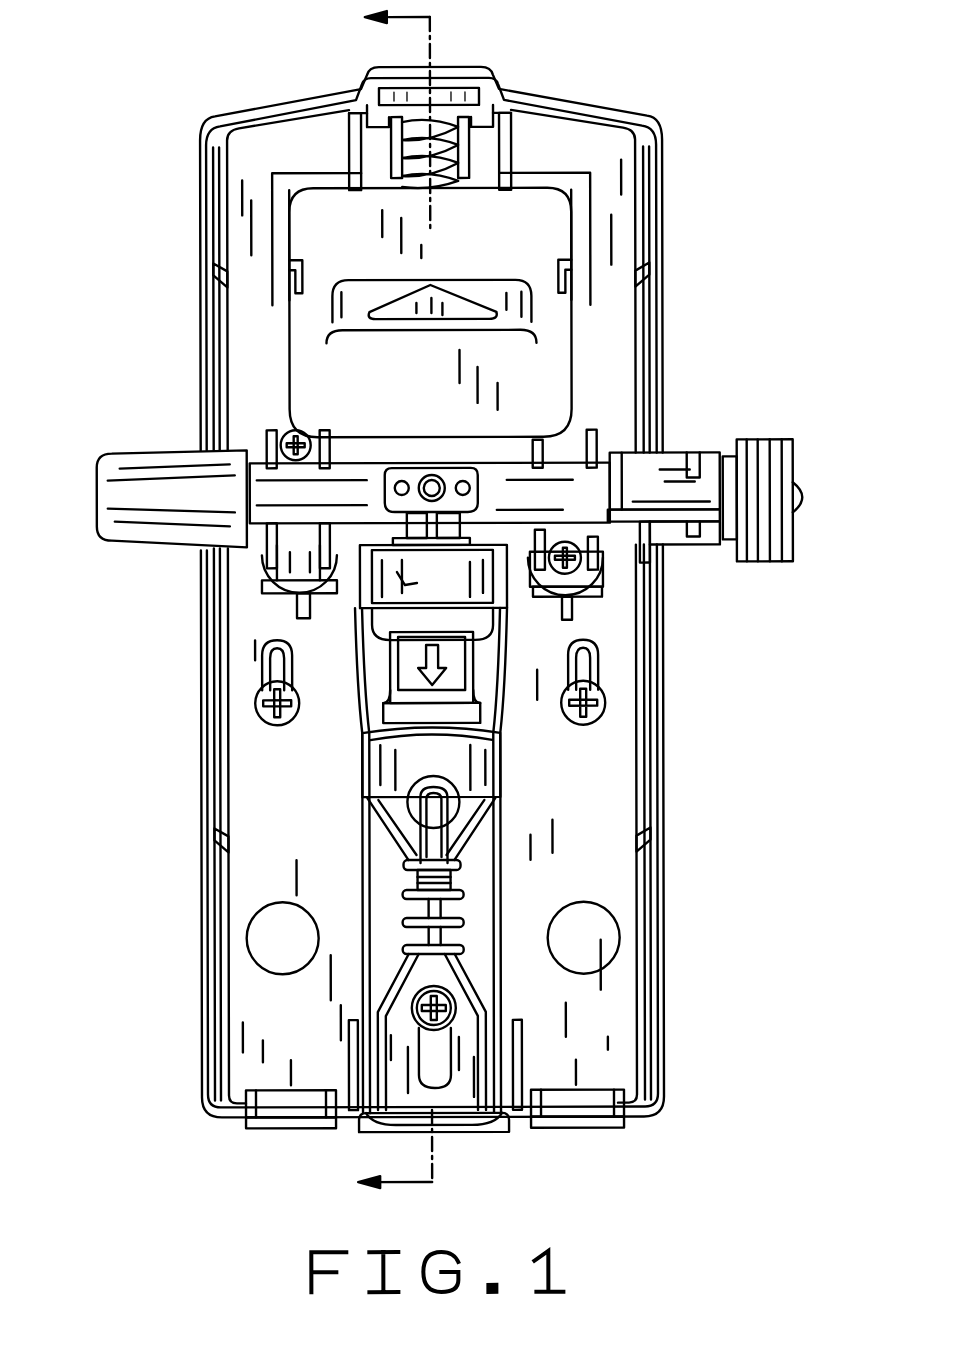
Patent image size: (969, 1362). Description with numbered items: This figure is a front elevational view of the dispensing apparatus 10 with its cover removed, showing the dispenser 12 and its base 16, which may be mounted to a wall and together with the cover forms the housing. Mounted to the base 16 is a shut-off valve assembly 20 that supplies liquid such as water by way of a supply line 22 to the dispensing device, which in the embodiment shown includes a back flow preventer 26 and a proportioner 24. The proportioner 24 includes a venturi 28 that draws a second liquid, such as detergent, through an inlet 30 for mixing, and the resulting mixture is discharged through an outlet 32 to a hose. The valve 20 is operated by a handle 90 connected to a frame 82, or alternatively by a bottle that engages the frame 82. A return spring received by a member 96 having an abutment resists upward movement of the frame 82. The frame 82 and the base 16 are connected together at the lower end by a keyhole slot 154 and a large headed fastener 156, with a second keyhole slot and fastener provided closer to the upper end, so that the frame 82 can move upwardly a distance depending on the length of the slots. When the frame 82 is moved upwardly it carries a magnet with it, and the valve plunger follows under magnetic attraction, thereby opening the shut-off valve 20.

The dispensing apparatus 10 is at (207, 97).
The dispenser 12 is at (543, 743).
The base 16 is at (202, 241).
The shut-off valve assembly 20 is at (407, 583).
The supply line 22 is at (705, 452).
The proportioner 24 is at (362, 752).
The back flow preventer 26 is at (357, 645).
The venturi 28 is at (407, 788).
The inlet 30 is at (412, 808).
The outlet 32 is at (387, 920).
The frame 82 is at (495, 862).
The handle 90 is at (500, 277).
The member 96 is at (470, 152).
The keyhole slot 154 is at (435, 1048).
The large headed fastener 156 is at (455, 1003).